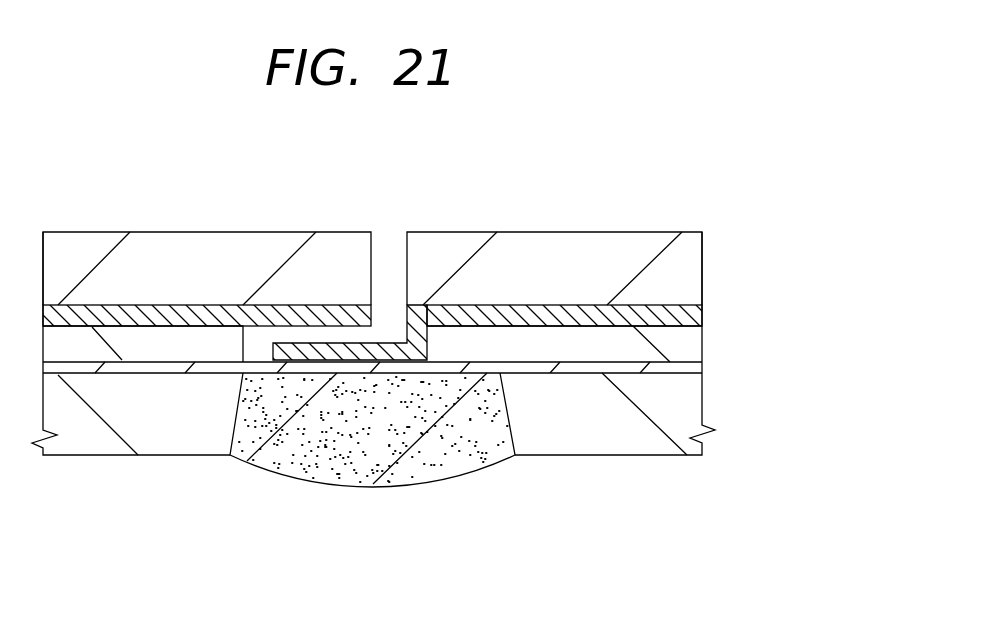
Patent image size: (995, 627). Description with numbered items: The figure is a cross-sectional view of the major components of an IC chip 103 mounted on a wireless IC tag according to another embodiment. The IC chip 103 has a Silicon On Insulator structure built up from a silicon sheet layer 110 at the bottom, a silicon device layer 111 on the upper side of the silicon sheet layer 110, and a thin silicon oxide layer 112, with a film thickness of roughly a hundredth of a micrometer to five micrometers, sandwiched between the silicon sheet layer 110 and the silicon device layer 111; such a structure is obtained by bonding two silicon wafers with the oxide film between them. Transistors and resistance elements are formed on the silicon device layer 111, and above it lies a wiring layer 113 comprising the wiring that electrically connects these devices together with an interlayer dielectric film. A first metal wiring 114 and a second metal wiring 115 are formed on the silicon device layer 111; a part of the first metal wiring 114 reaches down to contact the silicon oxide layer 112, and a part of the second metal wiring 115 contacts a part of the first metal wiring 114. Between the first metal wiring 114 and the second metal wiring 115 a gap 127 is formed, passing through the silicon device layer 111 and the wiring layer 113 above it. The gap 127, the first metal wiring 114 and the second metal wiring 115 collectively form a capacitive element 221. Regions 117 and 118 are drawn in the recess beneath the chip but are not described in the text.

The IC chip 103 is at (640, 232).
The silicon sheet layer 110 is at (642, 445).
The silicon device layer 111 is at (168, 350).
The silicon oxide layer 112 is at (558, 365).
The wiring layer 113 is at (558, 235).
The first metal wiring 114 is at (498, 303).
The second metal wiring 115 is at (310, 305).
The sacrificial filling 117 is at (510, 425).
The porous filling material 118 is at (307, 463).
The gap 127 is at (387, 275).
The capacitive element 221 is at (457, 178).